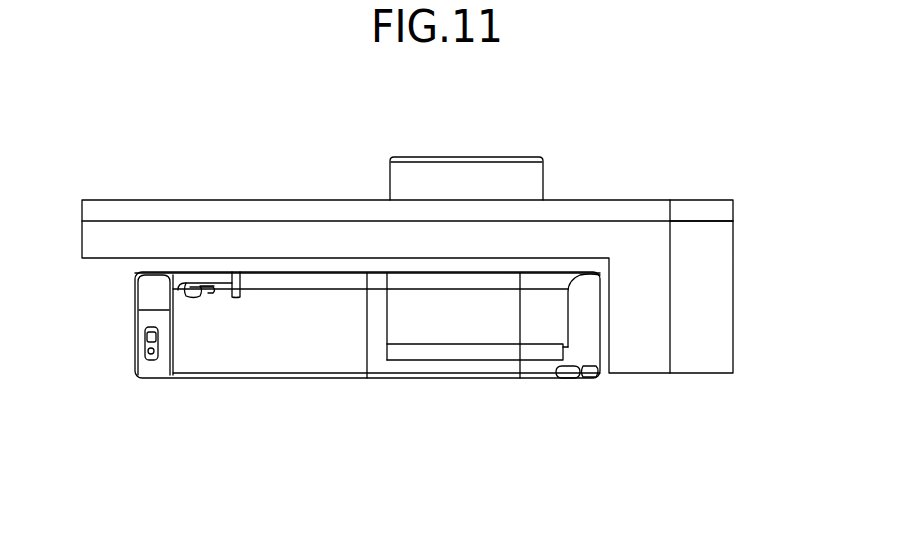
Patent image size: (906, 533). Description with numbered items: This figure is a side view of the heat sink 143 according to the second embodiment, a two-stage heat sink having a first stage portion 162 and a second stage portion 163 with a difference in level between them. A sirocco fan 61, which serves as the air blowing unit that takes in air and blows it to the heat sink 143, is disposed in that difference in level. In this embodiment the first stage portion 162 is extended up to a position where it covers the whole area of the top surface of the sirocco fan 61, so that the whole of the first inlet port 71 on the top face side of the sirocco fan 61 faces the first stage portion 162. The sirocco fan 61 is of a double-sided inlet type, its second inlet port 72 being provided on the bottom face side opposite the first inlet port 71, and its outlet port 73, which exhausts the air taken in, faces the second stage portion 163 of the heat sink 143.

The heat sink 143 is at (697, 162).
The first stage portion 162 is at (257, 230).
The second stage portion 163 is at (704, 353).
The sirocco fan 61 is at (161, 396).
The first inlet port 71 is at (445, 273).
The second inlet port 72 is at (430, 367).
The outlet port 73 is at (583, 355).